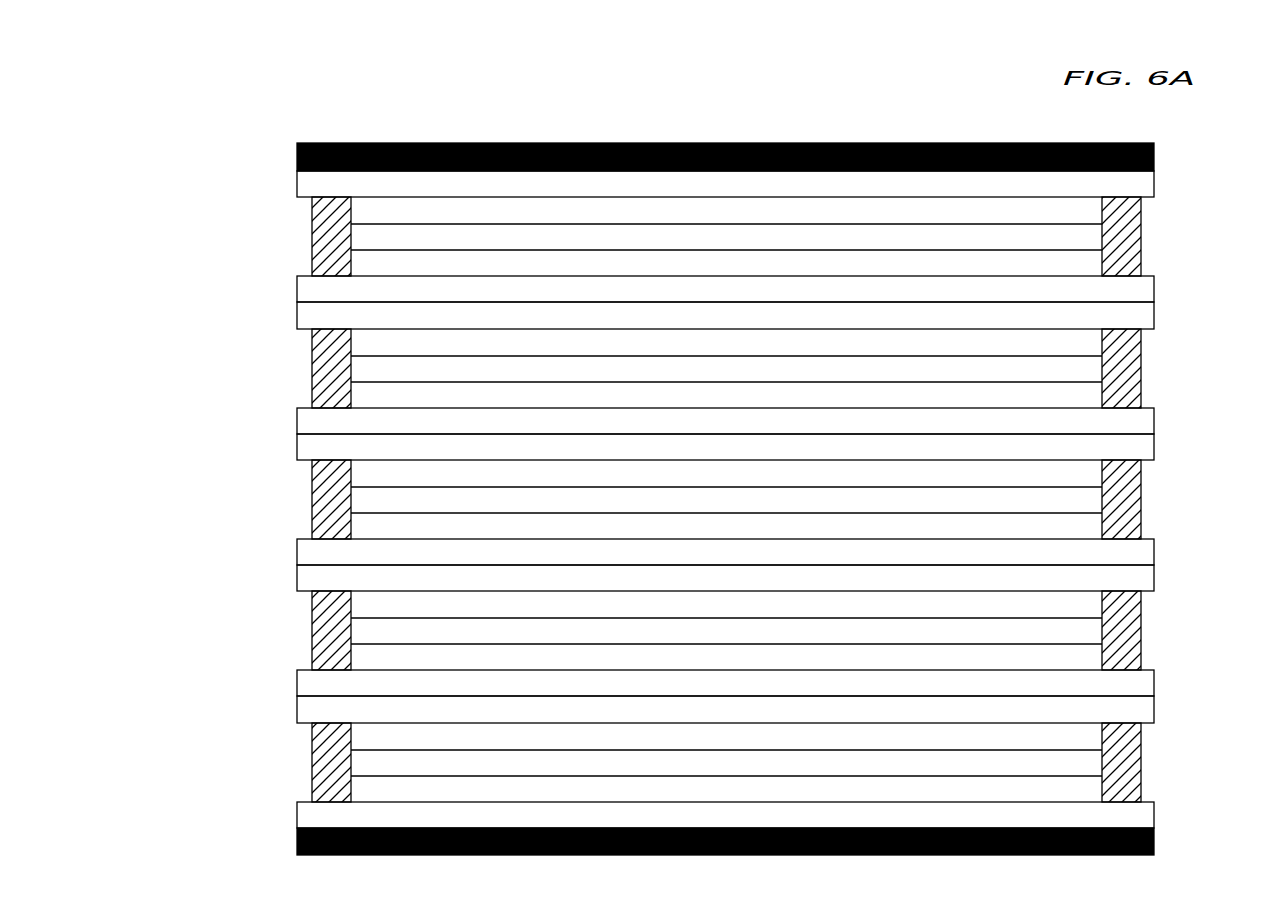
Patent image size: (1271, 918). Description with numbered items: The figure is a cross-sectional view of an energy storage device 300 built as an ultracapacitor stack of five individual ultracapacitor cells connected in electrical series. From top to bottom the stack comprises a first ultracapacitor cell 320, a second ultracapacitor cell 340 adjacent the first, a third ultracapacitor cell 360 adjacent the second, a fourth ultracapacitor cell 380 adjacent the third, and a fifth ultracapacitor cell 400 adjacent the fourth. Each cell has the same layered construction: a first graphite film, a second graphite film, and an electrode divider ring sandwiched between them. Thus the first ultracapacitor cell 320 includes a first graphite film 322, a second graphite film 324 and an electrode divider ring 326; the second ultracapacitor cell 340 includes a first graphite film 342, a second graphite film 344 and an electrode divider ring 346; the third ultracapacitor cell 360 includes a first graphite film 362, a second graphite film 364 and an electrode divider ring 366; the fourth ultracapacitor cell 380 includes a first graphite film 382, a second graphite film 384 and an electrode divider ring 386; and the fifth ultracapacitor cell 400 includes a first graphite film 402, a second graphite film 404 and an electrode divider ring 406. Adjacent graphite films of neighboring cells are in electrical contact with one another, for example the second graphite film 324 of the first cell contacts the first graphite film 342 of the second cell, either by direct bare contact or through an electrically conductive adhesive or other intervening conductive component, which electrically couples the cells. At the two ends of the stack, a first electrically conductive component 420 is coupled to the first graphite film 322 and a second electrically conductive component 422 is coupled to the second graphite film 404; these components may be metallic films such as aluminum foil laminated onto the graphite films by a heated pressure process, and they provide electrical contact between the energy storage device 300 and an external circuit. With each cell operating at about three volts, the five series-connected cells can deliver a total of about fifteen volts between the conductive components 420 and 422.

The energy storage device 300 is at (152, 109).
The first electrically conductive component 420 is at (297, 158).
The first ultracapacitor cell 320 is at (728, 236).
The first graphite film 322 is at (297, 184).
The second graphite film 324 is at (297, 289).
The electrode divider ring 326 is at (328, 232).
The second ultracapacitor cell 340 is at (728, 368).
The first graphite film 342 is at (297, 315).
The second graphite film 344 is at (297, 421).
The electrode divider ring 346 is at (328, 363).
The third ultracapacitor cell 360 is at (728, 499).
The first graphite film 362 is at (297, 447).
The second graphite film 364 is at (297, 552).
The electrode divider ring 366 is at (328, 494).
The fourth ultracapacitor cell 380 is at (728, 630).
The first graphite film 382 is at (297, 578).
The second graphite film 384 is at (297, 683).
The electrode divider ring 386 is at (328, 625).
The fifth ultracapacitor cell 400 is at (728, 762).
The first graphite film 402 is at (297, 710).
The second graphite film 404 is at (297, 815).
The electrode divider ring 406 is at (328, 757).
The second electrically conductive component 422 is at (297, 842).